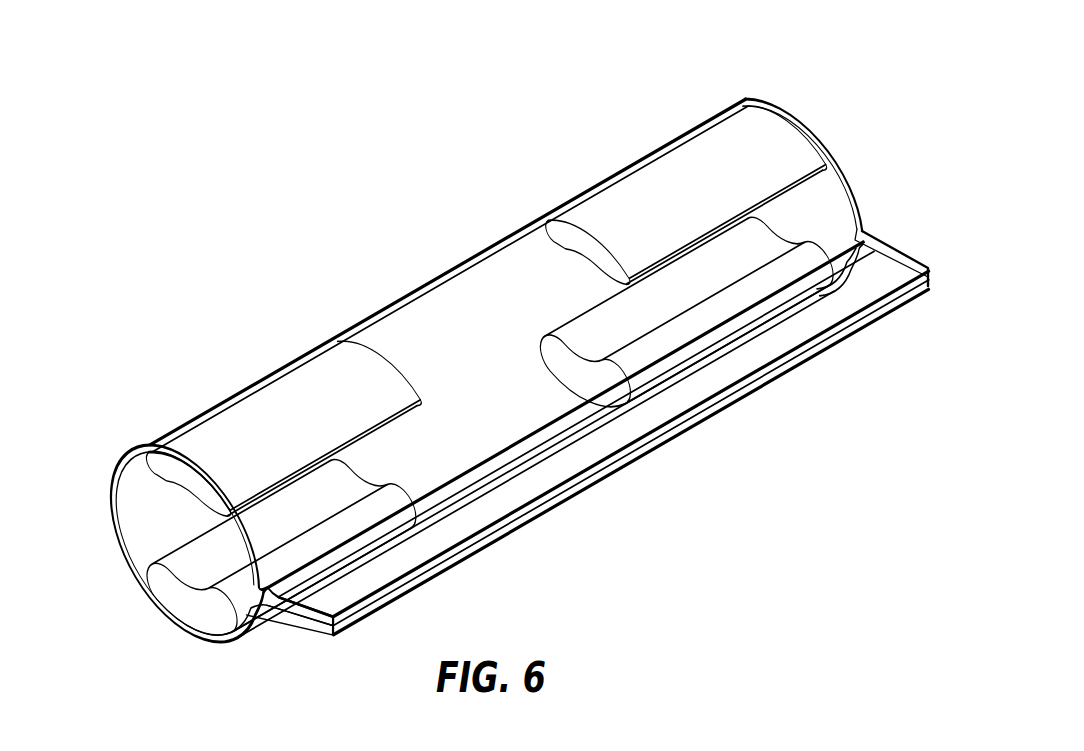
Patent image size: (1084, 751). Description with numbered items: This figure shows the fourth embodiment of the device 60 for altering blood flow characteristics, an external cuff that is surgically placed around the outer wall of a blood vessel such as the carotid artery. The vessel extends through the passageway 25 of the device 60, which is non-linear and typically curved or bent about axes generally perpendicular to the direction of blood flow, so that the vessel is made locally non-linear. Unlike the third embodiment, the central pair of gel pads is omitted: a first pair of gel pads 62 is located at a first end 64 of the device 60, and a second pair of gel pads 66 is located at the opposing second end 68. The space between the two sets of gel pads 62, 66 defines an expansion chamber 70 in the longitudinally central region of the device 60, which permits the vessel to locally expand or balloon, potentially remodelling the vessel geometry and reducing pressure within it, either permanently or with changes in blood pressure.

The device 60 is at (390, 250).
The first pair of gel pads 62 is at (245, 396).
The first end 64 is at (117, 462).
The second pair of gel pads 66 is at (645, 190).
The second end 68 is at (733, 97).
The expansion chamber 70 is at (482, 255).
The passageway 25 is at (187, 497).